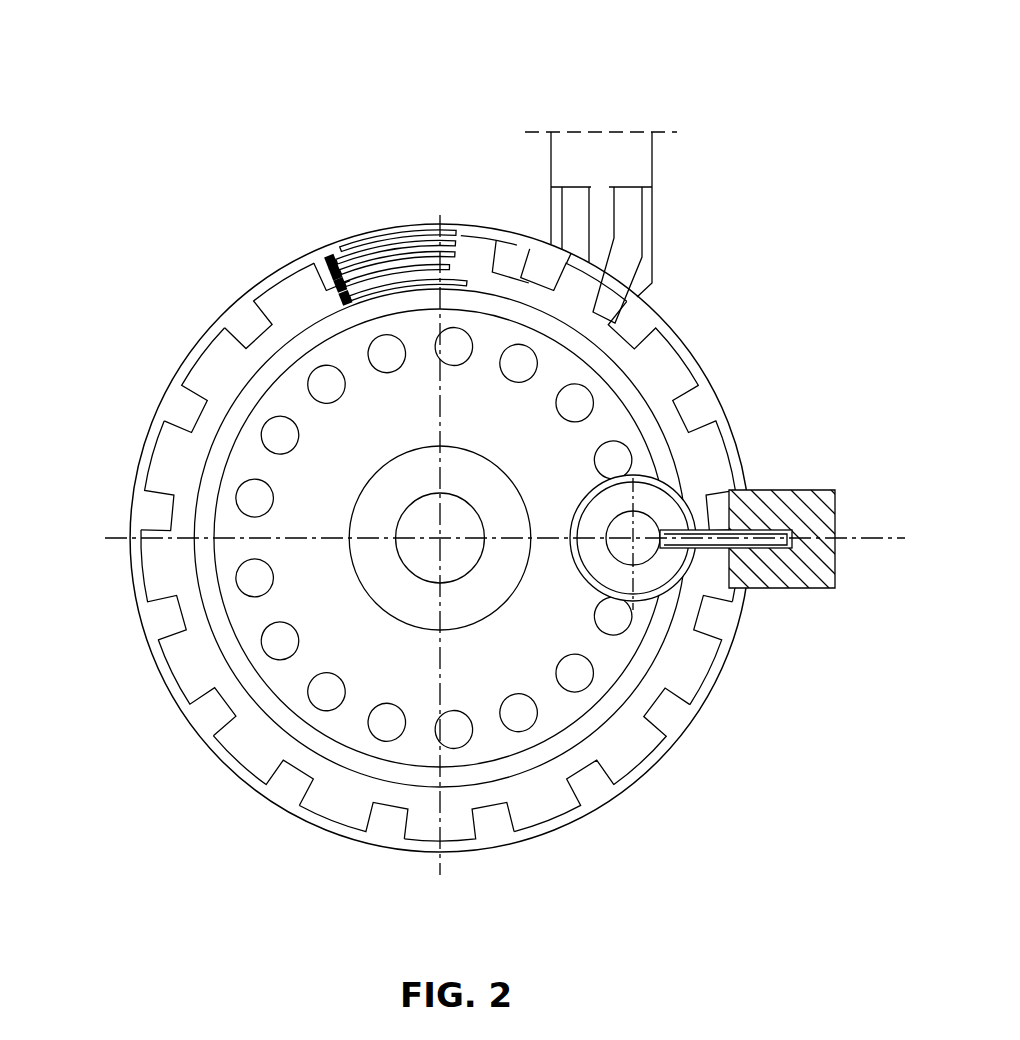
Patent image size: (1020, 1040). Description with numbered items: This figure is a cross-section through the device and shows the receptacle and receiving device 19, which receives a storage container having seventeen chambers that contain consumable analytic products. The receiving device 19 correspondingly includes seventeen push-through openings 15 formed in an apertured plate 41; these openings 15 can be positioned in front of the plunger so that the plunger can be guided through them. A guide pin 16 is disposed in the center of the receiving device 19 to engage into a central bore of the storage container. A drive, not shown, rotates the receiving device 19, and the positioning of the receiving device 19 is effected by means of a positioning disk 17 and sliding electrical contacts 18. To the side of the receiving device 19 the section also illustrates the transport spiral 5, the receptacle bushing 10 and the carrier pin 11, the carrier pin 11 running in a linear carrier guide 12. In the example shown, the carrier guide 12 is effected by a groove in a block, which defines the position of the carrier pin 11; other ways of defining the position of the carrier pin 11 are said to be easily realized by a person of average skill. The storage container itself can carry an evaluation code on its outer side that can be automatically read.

The receiving device 19 is at (250, 125).
The sliding electrical contacts 18 is at (401, 189).
The push-through openings 15 is at (320, 373).
The apertured plate 41 is at (347, 452).
The guide pin 16 is at (413, 525).
The positioning disk 17 is at (668, 353).
The receptacle bushing 10 is at (663, 512).
The carrier pin 11 is at (767, 537).
The carrier guide 12 is at (823, 565).
The transport spiral 5 is at (673, 582).